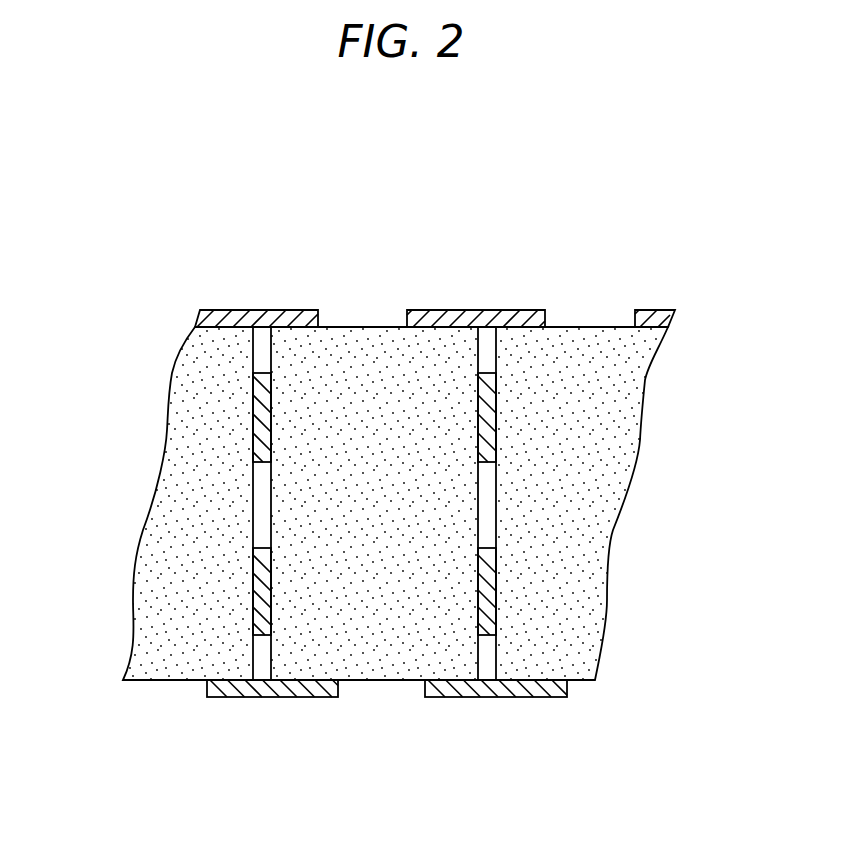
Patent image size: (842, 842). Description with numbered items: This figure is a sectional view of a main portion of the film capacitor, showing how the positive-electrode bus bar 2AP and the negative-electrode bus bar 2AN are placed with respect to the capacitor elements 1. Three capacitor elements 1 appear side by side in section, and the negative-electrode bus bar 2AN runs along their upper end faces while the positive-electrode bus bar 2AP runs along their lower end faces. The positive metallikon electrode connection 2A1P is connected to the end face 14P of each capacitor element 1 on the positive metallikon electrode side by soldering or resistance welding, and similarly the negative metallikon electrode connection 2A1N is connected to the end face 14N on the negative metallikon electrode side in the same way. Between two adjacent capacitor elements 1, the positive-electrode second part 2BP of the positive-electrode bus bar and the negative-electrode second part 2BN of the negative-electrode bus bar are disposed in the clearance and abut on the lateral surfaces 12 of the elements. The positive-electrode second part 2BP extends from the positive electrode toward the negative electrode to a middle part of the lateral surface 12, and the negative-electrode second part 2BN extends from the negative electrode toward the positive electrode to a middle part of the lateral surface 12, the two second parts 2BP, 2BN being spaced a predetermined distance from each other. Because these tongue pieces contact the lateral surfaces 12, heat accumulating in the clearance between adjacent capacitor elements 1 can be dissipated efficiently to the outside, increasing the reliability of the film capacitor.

The capacitor element 1 is at (153, 645).
The lateral surface 12 is at (270, 477).
The end face on negative metallikon electrode side 14N is at (372, 327).
The end face on positive metallikon electrode side 14P is at (360, 681).
The negative-electrode bus bar 2AN is at (217, 318).
The negative metallikon electrode connection 2A1N is at (293, 318).
The positive-electrode bus bar 2AP is at (305, 690).
The positive metallikon electrode connection 2A1P is at (227, 690).
The negative-electrode second part 2BN is at (264, 406).
The positive-electrode second part 2BP is at (266, 598).